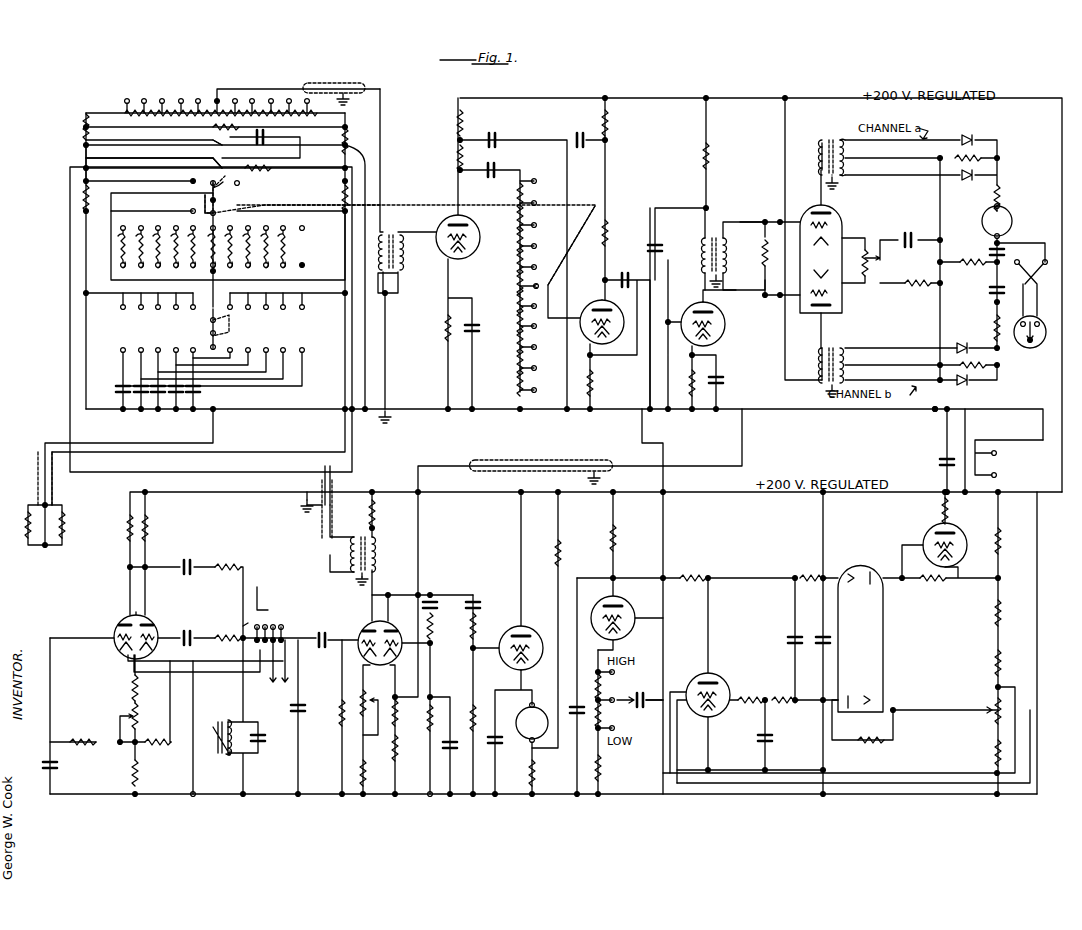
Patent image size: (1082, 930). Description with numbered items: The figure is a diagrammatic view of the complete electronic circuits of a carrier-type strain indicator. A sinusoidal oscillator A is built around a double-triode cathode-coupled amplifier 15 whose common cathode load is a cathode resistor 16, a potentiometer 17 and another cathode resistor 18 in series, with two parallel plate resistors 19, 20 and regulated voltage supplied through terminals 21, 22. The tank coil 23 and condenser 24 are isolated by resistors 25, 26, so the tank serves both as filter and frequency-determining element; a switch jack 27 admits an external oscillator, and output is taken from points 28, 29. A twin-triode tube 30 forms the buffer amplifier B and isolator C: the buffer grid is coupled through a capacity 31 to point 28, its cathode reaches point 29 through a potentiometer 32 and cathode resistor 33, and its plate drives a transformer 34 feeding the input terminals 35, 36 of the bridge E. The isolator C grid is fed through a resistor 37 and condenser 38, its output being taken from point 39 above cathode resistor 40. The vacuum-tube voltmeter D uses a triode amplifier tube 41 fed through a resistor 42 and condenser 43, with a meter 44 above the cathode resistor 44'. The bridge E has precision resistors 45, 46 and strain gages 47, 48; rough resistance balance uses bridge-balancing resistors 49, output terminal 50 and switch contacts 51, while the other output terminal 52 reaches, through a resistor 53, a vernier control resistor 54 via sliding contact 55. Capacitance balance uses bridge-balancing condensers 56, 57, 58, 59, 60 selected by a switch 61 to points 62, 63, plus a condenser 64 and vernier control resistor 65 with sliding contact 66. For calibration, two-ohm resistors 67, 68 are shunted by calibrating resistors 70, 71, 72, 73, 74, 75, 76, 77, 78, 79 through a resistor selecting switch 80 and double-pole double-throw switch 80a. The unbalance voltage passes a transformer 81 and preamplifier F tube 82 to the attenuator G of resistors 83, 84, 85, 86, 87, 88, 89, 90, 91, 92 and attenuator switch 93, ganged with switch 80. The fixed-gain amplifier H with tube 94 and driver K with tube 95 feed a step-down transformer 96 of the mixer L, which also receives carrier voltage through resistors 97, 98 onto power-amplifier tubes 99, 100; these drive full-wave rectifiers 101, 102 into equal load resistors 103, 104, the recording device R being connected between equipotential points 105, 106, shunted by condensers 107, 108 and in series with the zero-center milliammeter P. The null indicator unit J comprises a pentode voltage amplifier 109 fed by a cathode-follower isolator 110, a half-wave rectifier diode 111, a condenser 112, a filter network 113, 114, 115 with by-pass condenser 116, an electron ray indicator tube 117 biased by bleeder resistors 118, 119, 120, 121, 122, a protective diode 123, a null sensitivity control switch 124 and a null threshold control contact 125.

The amplifier 15 is at (154, 620).
The cathode resistor 16 is at (132, 691).
The potentiometer 17 is at (137, 714).
The cathode resistor 18 is at (137, 770).
The plate resistor 19 is at (128, 525).
The plate resistor 20 is at (147, 525).
The terminal 21 is at (996, 452).
The terminal 22 is at (996, 475).
The coil 23 is at (222, 754).
The condenser 24 is at (258, 743).
The resistor 25 is at (228, 560).
The resistor 26 is at (218, 638).
The switch jack 27 is at (273, 585).
The oscillator output point 28 is at (250, 636).
The oscillator output point 29 is at (243, 794).
The amplifier tube 30 is at (378, 642).
The capacity 31 is at (321, 645).
The potentiometer 32 is at (362, 700).
The cathode resistor 33 is at (366, 766).
The transformer 34 is at (356, 578).
The input terminal 35 is at (86, 164).
The input terminal 36 is at (345, 168).
The resistor 37 is at (435, 634).
The condenser 38 is at (436, 608).
The output point 39 is at (396, 704).
The cathode resistor 40 is at (397, 742).
The triode amplifier tube 41 is at (510, 666).
The resistor 42 is at (476, 628).
The condenser 43 is at (476, 602).
The meter 44 is at (525, 718).
The cathode resistor 44' is at (546, 768).
The precision resistor 45 is at (86, 122).
The precision resistor 46 is at (345, 139).
The wire resistance strain gage 47 is at (26, 523).
The wire resistance strain gage 48 is at (62, 527).
The rough control bridge-balancing resistors 49 is at (162, 99).
The output terminal 50 is at (215, 87).
The switch contacts 51 is at (198, 99).
The output terminal 52 is at (44, 537).
The resistor 53 is at (268, 170).
The vernier control resistor 54 is at (198, 157).
The sliding contact 55 is at (214, 158).
The bridge-balancing condenser 56 is at (122, 389).
The bridge-balancing condenser 57 is at (136, 396).
The bridge-balancing condenser 58 is at (158, 396).
The bridge-balancing condenser 59 is at (176, 396).
The bridge-balancing condenser 60 is at (196, 393).
The switch 61 is at (211, 334).
The point 62 is at (86, 293).
The point 63 is at (345, 293).
The condenser 64 is at (272, 136).
The vernier control resistor 65 is at (212, 144).
The sliding contact 66 is at (214, 129).
The two-ohm resistor 67 is at (86, 210).
The two-ohm resistor 68 is at (344, 205).
The calibrating resistor 70 is at (120, 240).
The calibrating resistor 71 is at (132, 255).
The calibrating resistor 72 is at (155, 240).
The calibrating resistor 73 is at (168, 255).
The calibrating resistor 74 is at (190, 240).
The calibrating resistor 75 is at (202, 255).
The calibrating resistor 76 is at (232, 240).
The calibrating resistor 77 is at (252, 256).
The calibrating resistor 78 is at (266, 240).
The calibrating resistor 79 is at (284, 256).
The resistor selecting switch 80 is at (214, 274).
The double-pole double-throw switch 80a is at (224, 185).
The transformer 81 is at (400, 286).
The triode amplifier tube 82 is at (444, 244).
The attenuator resistor 83 is at (518, 190).
The attenuator resistor 84 is at (518, 212).
The attenuator resistor 85 is at (518, 234).
The attenuator resistor 86 is at (518, 255).
The attenuator resistor 87 is at (518, 275).
The attenuator resistor 88 is at (518, 294).
The attenuator resistor 89 is at (518, 314).
The attenuator resistor 90 is at (518, 334).
The attenuator resistor 91 is at (518, 355).
The attenuator resistor 92 is at (518, 376).
The attenuator switch 93 is at (545, 281).
The tube 94 is at (594, 304).
The tube 95 is at (720, 314).
The step-down transformer 96 is at (714, 226).
The resistor 97 is at (764, 241).
The resistor 98 is at (764, 295).
The power-amplifier tube 99 is at (836, 204).
The power-amplifier tube 100 is at (840, 304).
The full-wave rectifier 101 is at (972, 134).
The full-wave rectifier 102 is at (968, 383).
The load resistor 103 is at (978, 155).
The load resistor 104 is at (968, 363).
The equipotential point 105 is at (998, 160).
The equipotential point 106 is at (998, 364).
The condenser 107 is at (990, 249).
The condenser 108 is at (990, 296).
The pentode voltage amplifier 109 is at (692, 678).
The cathode-follower isolator 110 is at (634, 630).
The half-wave rectifier diode 111 is at (858, 722).
The condenser 112 is at (792, 634).
The filter network element 113 is at (744, 698).
The filter network element 114 is at (782, 704).
The filter network element 115 is at (770, 742).
The condenser 116 is at (650, 688).
The electron ray indicator tube 117 is at (930, 532).
The bleeder resistor 118 is at (1000, 538).
The bleeder resistor 119 is at (1000, 608).
The bleeder resistor 120 is at (1000, 660).
The bleeder resistor 121 is at (989, 714).
The bleeder resistor 122 is at (990, 750).
The diode 123 is at (884, 566).
The null sensitivity control switch 124 is at (626, 702).
The null threshold control contact 125 is at (990, 703).
The sinusoidal oscillator A is at (111, 615).
The buffer amplifier B is at (357, 621).
The isolator C is at (397, 622).
The vacuum-tube voltmeter D is at (530, 616).
The bridge E is at (58, 253).
The preamplifier F is at (445, 210).
The attenuator G is at (520, 164).
The fixed-gain amplifier H is at (584, 337).
The null indicator unit J is at (969, 536).
The driver unit K is at (718, 338).
The mixer L is at (768, 213).
The zero-center milliammeter P is at (1011, 214).
The recording device R is at (1048, 330).